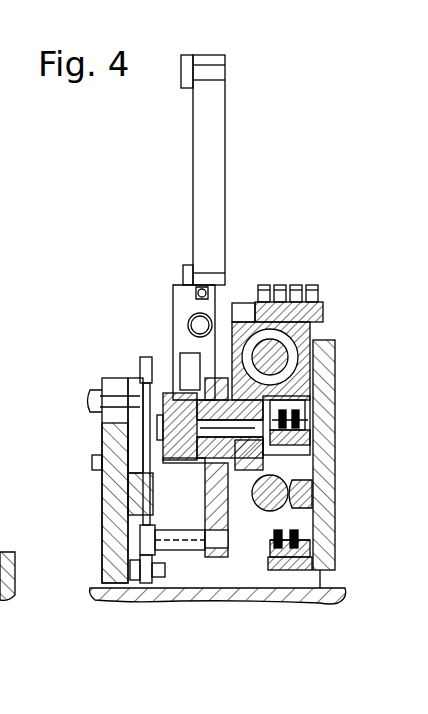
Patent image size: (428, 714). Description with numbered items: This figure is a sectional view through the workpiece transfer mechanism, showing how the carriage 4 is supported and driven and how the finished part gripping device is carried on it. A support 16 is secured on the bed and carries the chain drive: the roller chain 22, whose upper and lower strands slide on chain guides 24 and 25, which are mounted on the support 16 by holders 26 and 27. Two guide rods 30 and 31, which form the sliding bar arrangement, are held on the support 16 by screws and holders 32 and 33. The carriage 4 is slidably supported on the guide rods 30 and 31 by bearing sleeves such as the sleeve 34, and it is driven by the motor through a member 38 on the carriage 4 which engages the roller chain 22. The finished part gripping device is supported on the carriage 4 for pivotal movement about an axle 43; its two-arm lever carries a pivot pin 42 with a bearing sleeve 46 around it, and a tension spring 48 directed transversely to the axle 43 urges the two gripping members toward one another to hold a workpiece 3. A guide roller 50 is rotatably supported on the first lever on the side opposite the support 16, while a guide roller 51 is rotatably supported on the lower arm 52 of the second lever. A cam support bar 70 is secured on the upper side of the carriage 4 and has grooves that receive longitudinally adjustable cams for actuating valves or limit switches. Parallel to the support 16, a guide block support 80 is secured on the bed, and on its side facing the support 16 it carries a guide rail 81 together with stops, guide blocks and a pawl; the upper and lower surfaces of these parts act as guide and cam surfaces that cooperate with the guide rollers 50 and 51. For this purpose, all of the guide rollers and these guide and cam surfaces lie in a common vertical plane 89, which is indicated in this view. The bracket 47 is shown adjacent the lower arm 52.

The workpiece 3 is at (7, 529).
The carriage 4 is at (315, 387).
The support 16 is at (320, 588).
The roller chain 22 is at (312, 533).
The chain guide 24 is at (312, 433).
The chain guide 25 is at (312, 550).
The holder 26 is at (300, 458).
The holder 27 is at (297, 570).
The guide rod 30 is at (300, 364).
The guide rod 31 is at (300, 505).
The holder 32 is at (335, 346).
The holder 33 is at (312, 486).
The bearing sleeve 34 is at (303, 336).
The member 38 is at (302, 405).
The pivot pin 42 is at (217, 378).
The axle 43 is at (165, 427).
The bearing sleeve 46 is at (190, 463).
The bracket 47 is at (246, 474).
The tension spring 48 is at (192, 326).
The guide roller 50 is at (140, 360).
The guide roller 51 is at (178, 548).
The lower arm 52 is at (222, 557).
The cam support bar 70 is at (323, 300).
The guide block support 80 is at (112, 490).
The guide rail 81 is at (142, 583).
The vertical plane 89 is at (150, 610).